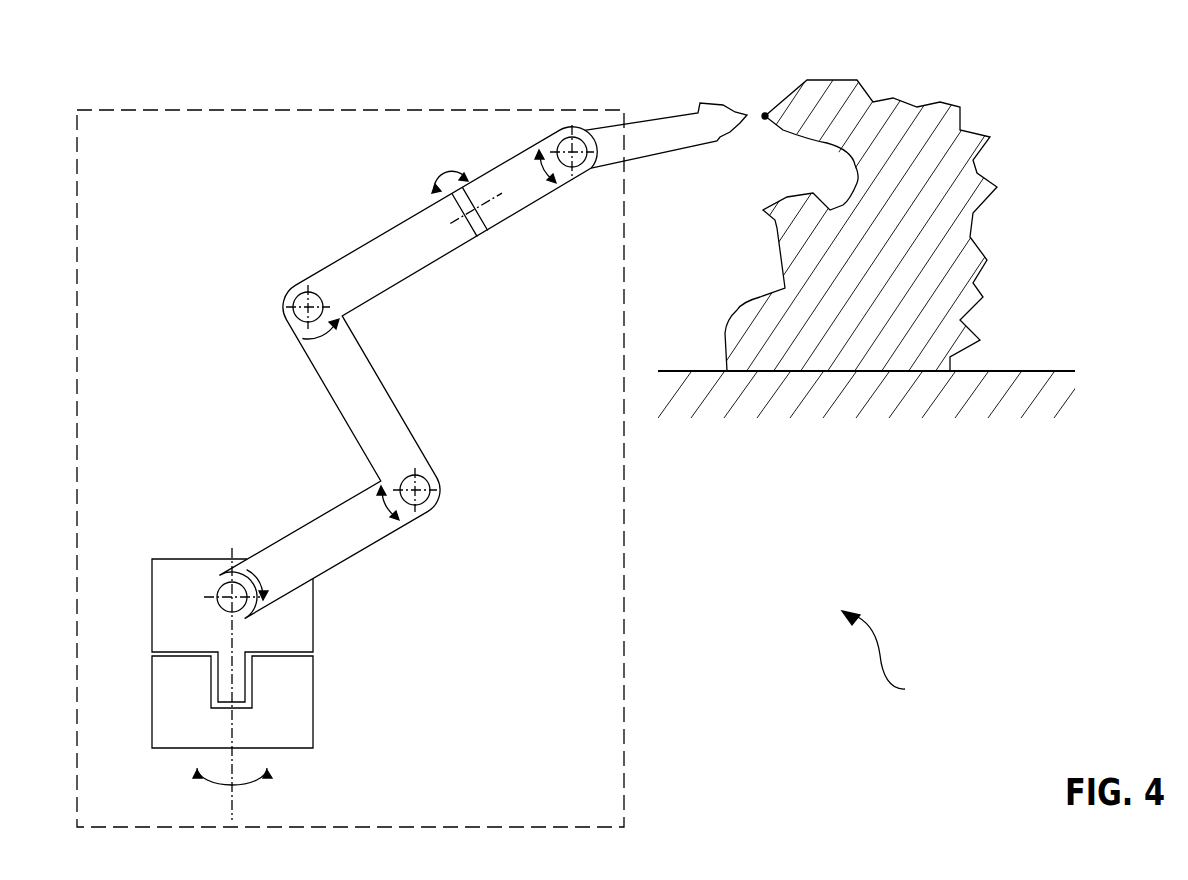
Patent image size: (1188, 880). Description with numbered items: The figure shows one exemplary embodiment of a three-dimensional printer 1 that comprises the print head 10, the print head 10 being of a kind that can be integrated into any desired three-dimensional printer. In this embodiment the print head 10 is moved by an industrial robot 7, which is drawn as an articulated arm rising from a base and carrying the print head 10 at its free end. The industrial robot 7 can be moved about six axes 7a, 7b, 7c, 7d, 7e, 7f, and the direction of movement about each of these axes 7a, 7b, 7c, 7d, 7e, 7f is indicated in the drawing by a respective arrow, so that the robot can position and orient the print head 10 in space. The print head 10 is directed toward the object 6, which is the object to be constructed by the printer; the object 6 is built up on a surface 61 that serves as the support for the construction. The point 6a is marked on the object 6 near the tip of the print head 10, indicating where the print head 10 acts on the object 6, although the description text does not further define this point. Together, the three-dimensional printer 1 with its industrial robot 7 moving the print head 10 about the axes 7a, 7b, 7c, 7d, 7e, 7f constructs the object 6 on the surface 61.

The 3D printer 1 is at (884, 662).
The object 6 is at (977, 233).
The surface point of object 6a is at (765, 114).
The surface 61 is at (1040, 370).
The industrial robot 7 is at (624, 563).
The axis 7a is at (232, 805).
The axis 7b is at (212, 607).
The axis 7c is at (438, 480).
The axis 7d is at (295, 288).
The axis 7e is at (457, 226).
The axis 7f is at (585, 170).
The print head 10 is at (663, 135).